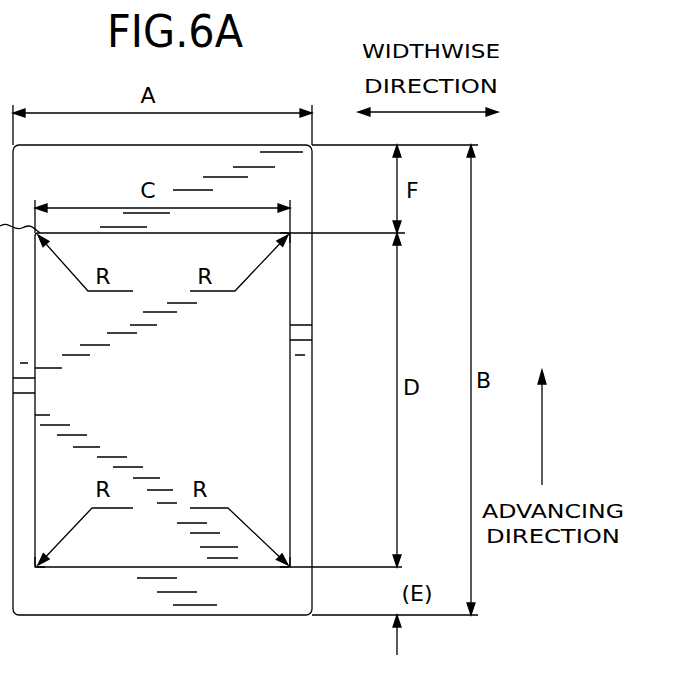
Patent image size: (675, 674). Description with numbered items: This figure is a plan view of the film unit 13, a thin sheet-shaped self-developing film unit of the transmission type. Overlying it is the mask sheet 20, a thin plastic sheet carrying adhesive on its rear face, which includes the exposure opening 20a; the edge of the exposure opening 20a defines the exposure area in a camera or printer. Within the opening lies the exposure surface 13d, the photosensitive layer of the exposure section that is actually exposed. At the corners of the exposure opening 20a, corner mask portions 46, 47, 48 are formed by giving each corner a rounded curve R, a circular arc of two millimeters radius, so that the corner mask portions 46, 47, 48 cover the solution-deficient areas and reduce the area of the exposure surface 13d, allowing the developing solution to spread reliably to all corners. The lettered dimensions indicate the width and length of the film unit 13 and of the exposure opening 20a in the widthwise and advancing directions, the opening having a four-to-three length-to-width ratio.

The film unit 13 is at (322, 348).
The exposure surface 13d is at (165, 440).
The mask sheet 20 is at (148, 613).
The exposure opening 20a is at (35, 385).
The corner mask portion 46 is at (288, 233).
The corner mask portion 47 is at (38, 567).
The corner mask portion 48 is at (290, 568).